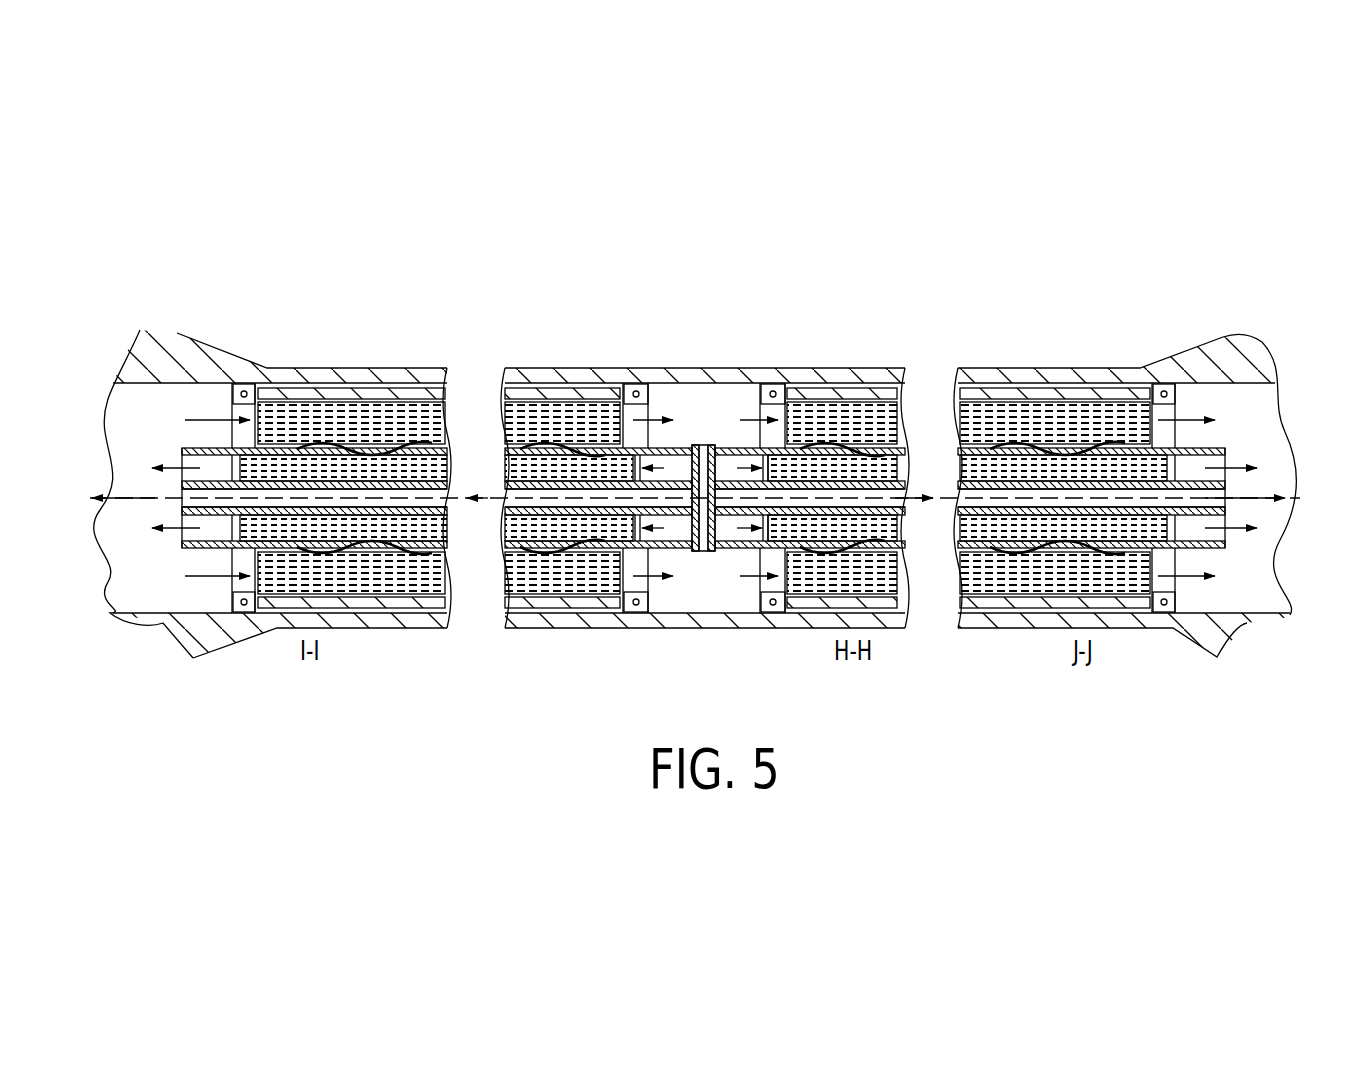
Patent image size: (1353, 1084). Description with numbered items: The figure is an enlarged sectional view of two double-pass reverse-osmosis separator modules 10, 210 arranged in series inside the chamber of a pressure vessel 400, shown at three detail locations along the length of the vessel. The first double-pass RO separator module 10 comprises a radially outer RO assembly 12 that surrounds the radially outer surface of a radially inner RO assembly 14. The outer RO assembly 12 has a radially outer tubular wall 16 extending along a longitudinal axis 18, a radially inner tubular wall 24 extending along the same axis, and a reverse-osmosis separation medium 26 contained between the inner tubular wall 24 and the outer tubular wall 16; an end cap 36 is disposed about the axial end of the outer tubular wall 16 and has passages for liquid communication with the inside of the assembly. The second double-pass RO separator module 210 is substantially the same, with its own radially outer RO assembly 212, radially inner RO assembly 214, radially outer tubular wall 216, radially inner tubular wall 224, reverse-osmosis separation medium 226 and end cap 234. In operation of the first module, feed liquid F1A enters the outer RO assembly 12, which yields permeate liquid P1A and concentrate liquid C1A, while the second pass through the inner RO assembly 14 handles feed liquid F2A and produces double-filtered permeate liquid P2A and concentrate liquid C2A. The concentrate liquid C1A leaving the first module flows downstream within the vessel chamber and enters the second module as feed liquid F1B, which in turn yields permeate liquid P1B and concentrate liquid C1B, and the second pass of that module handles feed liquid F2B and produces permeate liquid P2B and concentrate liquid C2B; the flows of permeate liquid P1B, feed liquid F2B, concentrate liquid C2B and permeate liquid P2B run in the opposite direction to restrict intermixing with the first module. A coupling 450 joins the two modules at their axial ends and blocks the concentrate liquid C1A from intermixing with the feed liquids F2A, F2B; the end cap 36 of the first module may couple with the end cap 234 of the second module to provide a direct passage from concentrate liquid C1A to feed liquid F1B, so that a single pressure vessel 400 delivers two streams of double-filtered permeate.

The pressure vessel 400 is at (205, 305).
The double-pass reverse-osmosis separator module 10 is at (374, 381).
The radially outer RO assembly 12 is at (176, 391).
The radially inner RO assembly 14 is at (565, 400).
The radially outer tubular wall 16 is at (317, 397).
The longitudinal axis 18 is at (125, 498).
The radially inner tubular wall 24 is at (128, 440).
The reverse-osmosis separation medium 26 is at (437, 416).
The end cap 36 is at (635, 388).
The double-pass RO separator module 210 is at (993, 388).
The radially outer RO assembly 212 is at (1186, 395).
The radially inner RO assembly 214 is at (824, 452).
The radially outer tubular wall 216 is at (1062, 400).
The radially inner tubular wall 224 is at (1215, 448).
The reverse-osmosis separation medium 226 is at (887, 411).
The end cap 234 is at (745, 388).
The coupling 450 is at (715, 558).
The feed liquid F1A is at (200, 420).
The feed liquid F2A is at (678, 447).
The concentrate liquid C1A is at (656, 450).
The concentrate liquid C2A is at (173, 467).
The permeate liquid P1A is at (478, 452).
The permeate liquid P2A is at (130, 498).
The feed liquid F1B is at (780, 386).
The feed liquid F2B is at (726, 445).
The concentrate liquid C1B is at (1198, 416).
The concentrate liquid C2B is at (1240, 468).
The permeate liquid P1B is at (970, 452).
The permeate liquid P2B is at (935, 490).